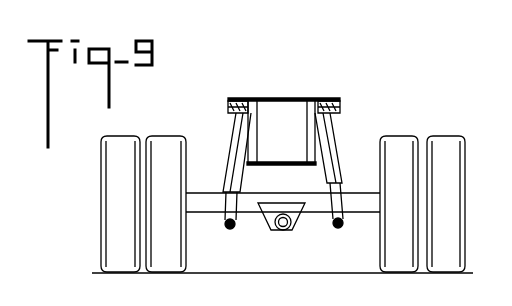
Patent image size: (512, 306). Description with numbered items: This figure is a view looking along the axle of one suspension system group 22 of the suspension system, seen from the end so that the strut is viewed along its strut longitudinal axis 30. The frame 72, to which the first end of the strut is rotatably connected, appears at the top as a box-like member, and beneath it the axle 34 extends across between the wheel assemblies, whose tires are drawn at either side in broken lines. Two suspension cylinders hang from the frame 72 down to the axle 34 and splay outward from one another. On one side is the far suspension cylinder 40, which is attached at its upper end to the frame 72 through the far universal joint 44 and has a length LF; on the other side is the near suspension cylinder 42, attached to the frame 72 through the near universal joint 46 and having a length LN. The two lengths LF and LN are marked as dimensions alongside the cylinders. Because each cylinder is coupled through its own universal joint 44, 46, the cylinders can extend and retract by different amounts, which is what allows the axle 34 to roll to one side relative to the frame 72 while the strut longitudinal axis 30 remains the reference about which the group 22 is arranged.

The suspension system group 22 is at (396, 89).
The strut longitudinal axis 30 is at (278, 229).
The axle 34 is at (314, 205).
The far suspension cylinder 40 is at (240, 172).
The near suspension cylinder 42 is at (328, 172).
The far universal joint 44 is at (242, 100).
The near universal joint 46 is at (330, 100).
The frame 72 is at (290, 98).
The length of far suspension cylinder LF is at (222, 103).
The length of near suspension cylinder LN is at (340, 102).